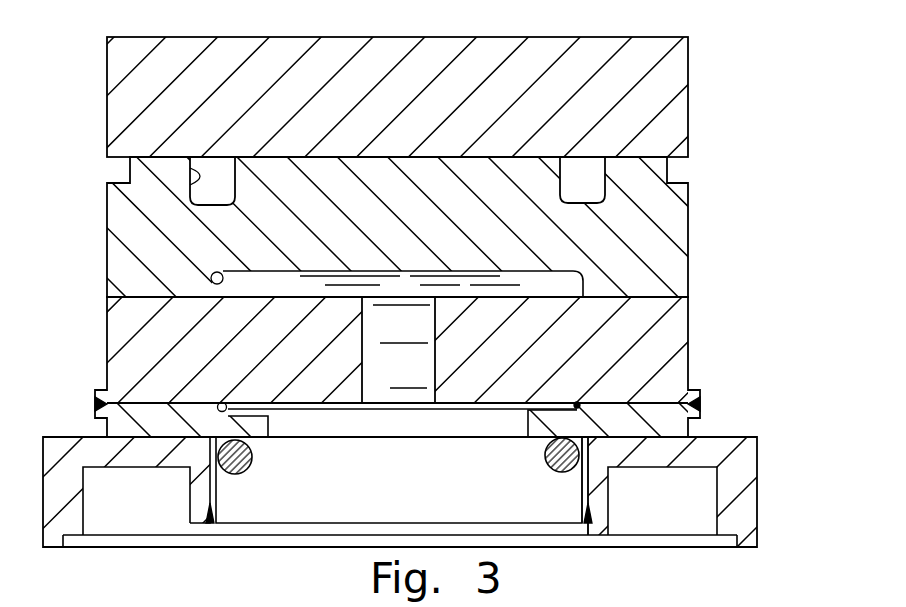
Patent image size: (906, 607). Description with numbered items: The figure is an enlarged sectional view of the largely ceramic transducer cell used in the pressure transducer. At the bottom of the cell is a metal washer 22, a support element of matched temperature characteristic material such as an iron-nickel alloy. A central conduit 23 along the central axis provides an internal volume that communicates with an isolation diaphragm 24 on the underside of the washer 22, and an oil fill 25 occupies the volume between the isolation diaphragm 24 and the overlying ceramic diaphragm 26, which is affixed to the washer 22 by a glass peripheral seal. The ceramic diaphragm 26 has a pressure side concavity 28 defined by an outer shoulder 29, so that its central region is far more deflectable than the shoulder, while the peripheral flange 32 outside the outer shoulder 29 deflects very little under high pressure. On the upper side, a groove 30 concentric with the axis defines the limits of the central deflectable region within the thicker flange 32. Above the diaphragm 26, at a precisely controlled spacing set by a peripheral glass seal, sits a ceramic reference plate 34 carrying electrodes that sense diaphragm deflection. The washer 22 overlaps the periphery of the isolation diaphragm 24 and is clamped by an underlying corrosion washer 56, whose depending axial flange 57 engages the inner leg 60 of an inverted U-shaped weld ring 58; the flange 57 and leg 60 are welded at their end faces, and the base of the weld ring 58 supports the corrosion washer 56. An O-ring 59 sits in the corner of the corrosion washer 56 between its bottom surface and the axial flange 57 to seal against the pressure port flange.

The metal washer 22 is at (688, 353).
The central conduit 23 is at (362, 362).
The isolation diaphragm 24 is at (362, 363).
The oil fill 25 is at (567, 288).
The ceramic diaphragm 26 is at (690, 232).
The pressure side concavity 28 is at (293, 272).
The outer shoulder 29 is at (214, 272).
The groove 30 is at (187, 171).
The peripheral flange 32 is at (645, 238).
The reference plate 34 is at (688, 105).
The corrosion washer 56 is at (688, 427).
The depending axial flange 57 is at (588, 505).
The weld ring 58 is at (757, 478).
The O-ring 59 is at (562, 473).
The inner leg 60 is at (190, 495).